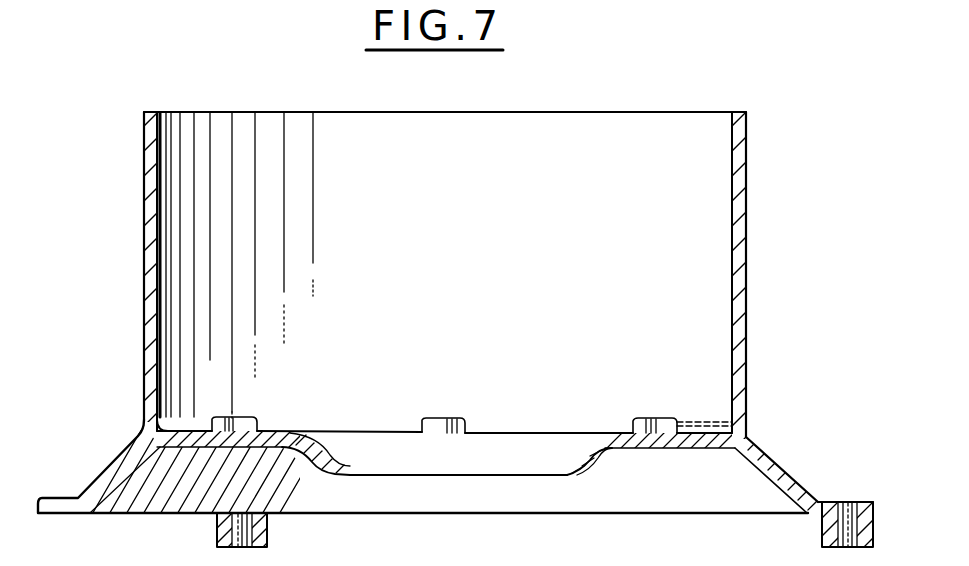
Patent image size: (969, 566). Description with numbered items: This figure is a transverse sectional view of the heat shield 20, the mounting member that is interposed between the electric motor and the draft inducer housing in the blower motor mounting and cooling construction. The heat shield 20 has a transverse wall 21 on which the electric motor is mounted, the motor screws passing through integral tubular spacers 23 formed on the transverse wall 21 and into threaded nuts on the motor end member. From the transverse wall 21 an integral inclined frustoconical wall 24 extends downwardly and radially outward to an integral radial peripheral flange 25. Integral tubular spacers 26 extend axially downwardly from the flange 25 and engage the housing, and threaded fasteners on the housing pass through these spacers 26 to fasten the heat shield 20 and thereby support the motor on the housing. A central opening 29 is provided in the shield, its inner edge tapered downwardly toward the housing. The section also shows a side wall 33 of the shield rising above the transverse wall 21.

The heat shield 20 is at (756, 251).
The transverse wall 21 is at (174, 436).
The integral tubular spacers 23 is at (240, 418).
The inclined frustoconical wall 24 is at (781, 470).
The radial peripheral flange 25 is at (63, 497).
The integral tubular spacers 26 is at (268, 533).
The central opening 29 is at (526, 464).
The cylindrical side wall 33 is at (746, 321).